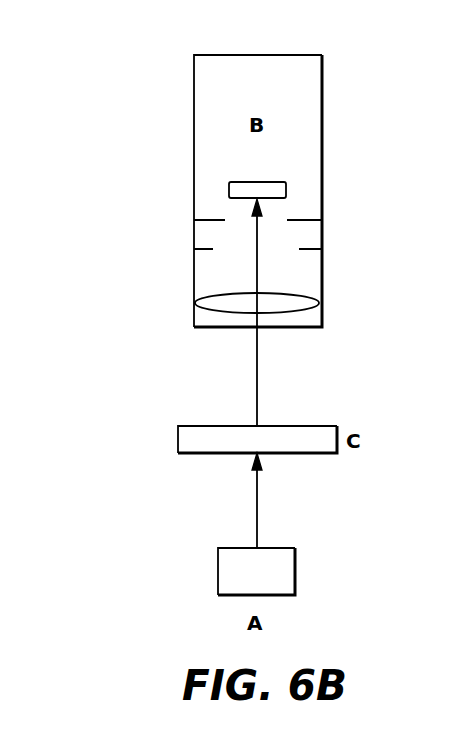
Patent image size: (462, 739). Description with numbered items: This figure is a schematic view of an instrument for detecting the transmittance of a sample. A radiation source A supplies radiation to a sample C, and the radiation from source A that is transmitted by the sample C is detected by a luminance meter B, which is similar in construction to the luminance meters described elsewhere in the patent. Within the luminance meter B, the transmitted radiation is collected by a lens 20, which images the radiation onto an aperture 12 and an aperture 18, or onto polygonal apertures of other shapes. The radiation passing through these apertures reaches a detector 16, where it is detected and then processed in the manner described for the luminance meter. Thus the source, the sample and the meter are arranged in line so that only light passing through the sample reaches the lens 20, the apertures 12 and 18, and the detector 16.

The detector 16 is at (267, 183).
The aperture 18 is at (187, 197).
The aperture 12 is at (205, 248).
The lens 20 is at (206, 329).